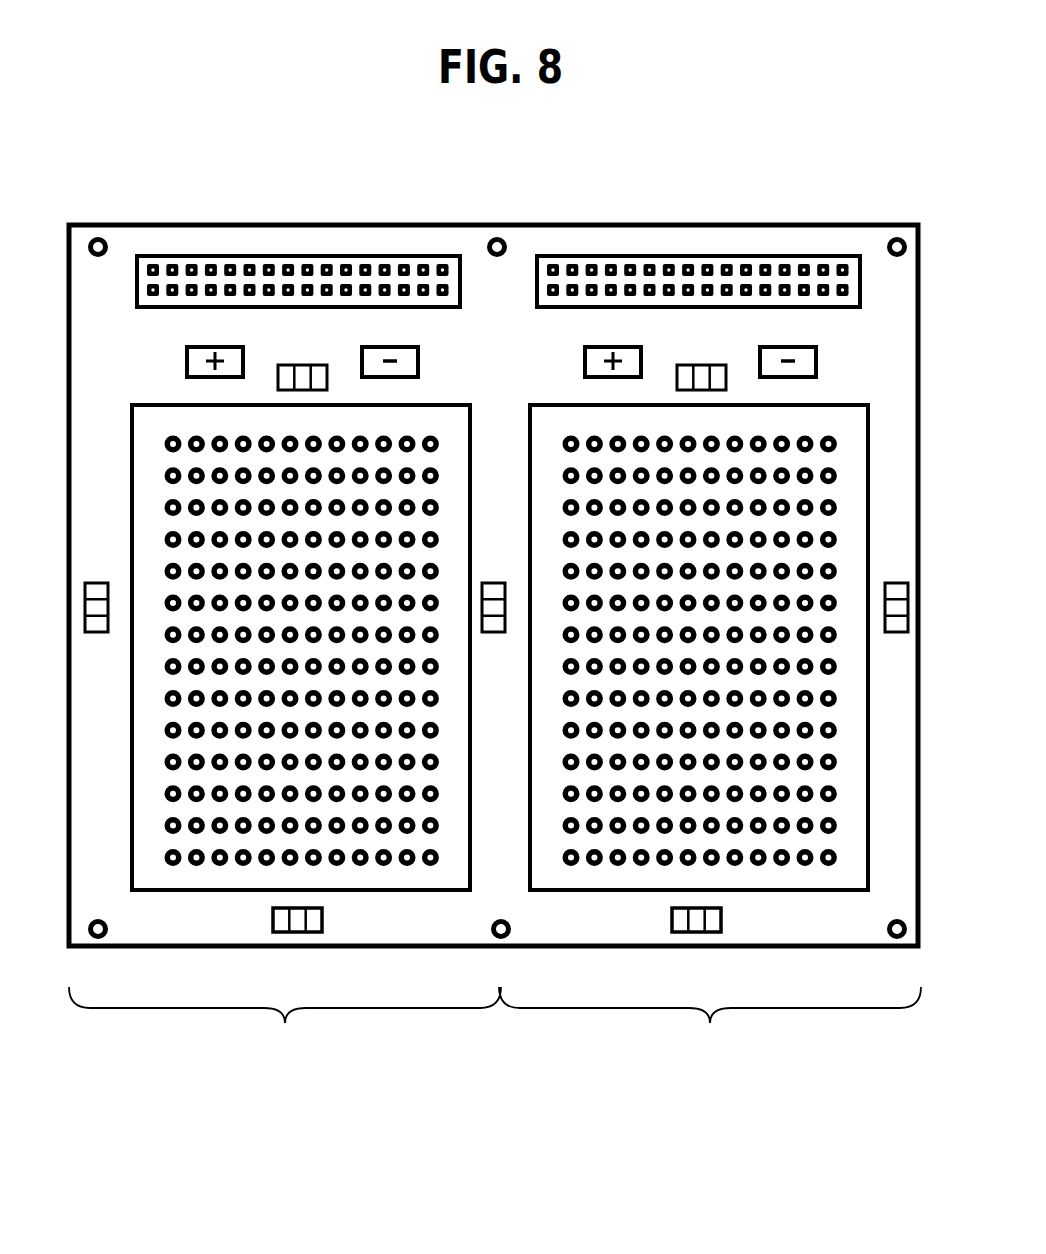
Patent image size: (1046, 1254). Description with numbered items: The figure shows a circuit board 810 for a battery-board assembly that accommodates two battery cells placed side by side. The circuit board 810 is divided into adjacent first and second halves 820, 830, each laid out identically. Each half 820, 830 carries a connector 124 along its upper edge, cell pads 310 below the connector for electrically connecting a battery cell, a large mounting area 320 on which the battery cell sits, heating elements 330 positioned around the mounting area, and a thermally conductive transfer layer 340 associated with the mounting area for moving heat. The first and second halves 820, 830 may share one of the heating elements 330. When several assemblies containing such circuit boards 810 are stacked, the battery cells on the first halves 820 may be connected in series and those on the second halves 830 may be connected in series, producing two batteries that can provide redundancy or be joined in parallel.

The circuit board 810 is at (856, 220).
The connector 124 is at (233, 256).
The cell pads 310 is at (187, 359).
The mounting area 320 is at (425, 403).
The heating elements 330 is at (273, 921).
The thermally conductive transfer layer 340 is at (395, 873).
The first half 820 is at (285, 1025).
The second half 830 is at (710, 1025).